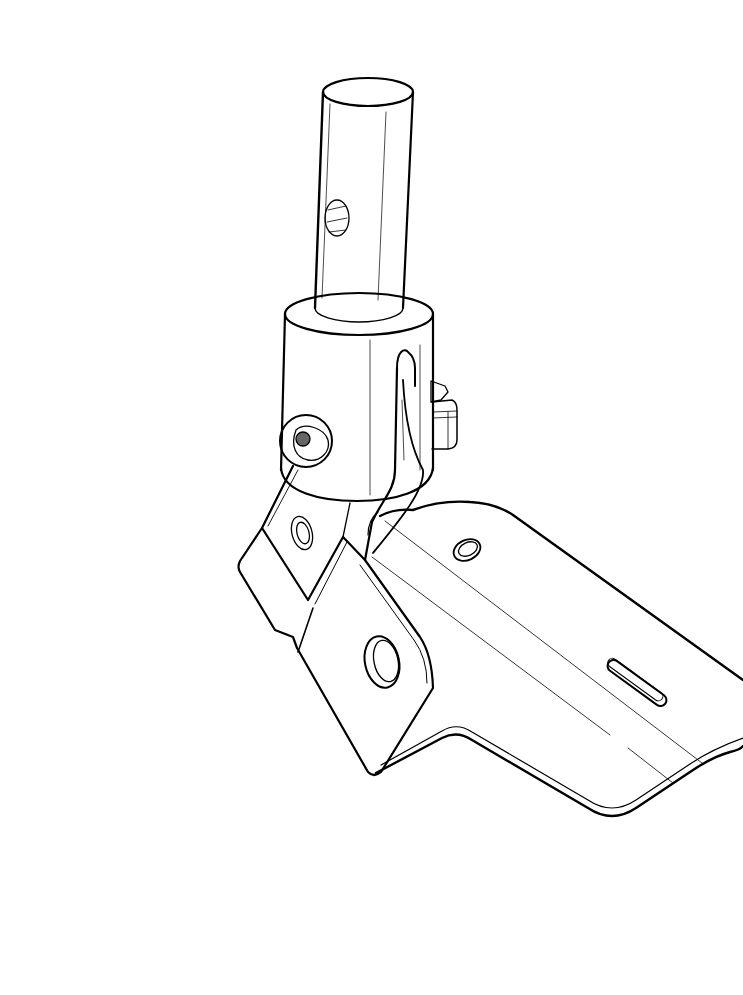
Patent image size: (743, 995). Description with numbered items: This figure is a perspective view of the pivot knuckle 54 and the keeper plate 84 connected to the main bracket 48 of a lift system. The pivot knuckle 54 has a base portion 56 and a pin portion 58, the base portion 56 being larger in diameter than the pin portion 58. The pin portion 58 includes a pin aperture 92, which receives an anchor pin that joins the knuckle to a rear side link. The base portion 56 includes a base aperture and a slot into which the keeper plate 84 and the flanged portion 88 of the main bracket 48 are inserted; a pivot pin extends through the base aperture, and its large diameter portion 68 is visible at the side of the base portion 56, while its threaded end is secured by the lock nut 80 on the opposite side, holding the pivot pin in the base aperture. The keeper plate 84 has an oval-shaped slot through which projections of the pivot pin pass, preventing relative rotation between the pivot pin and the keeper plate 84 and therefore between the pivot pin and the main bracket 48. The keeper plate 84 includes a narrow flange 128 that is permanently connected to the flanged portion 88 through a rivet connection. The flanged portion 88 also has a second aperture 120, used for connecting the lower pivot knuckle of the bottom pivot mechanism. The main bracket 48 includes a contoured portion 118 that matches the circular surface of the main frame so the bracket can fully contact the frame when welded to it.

The pivot knuckle 54 is at (299, 140).
The pin portion 58 is at (395, 162).
The pin aperture 92 is at (330, 215).
The base portion 56 is at (413, 362).
The lock nut 80 is at (291, 427).
The large diameter portion 68 is at (457, 427).
The keeper plate 84 is at (410, 493).
The narrow flange 128 is at (291, 493).
The flanged portion 88 is at (243, 567).
The second aperture 120 is at (370, 672).
The main bracket 48 is at (612, 617).
The contoured portion 118 is at (503, 598).